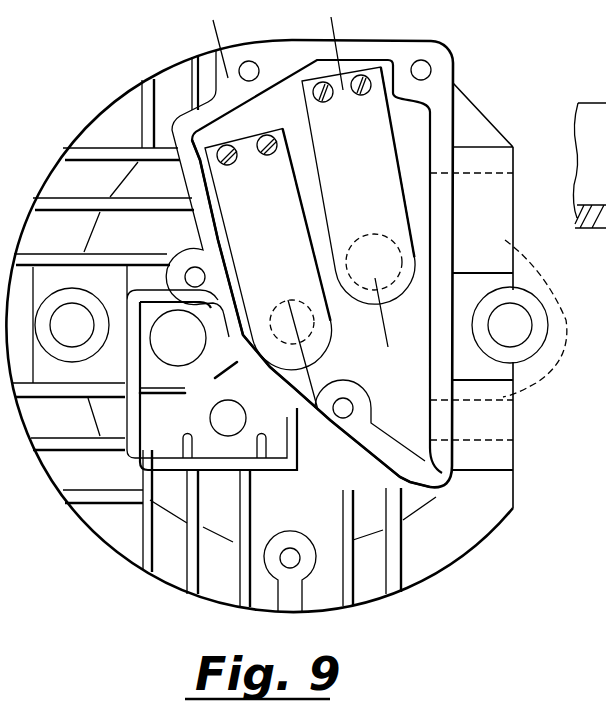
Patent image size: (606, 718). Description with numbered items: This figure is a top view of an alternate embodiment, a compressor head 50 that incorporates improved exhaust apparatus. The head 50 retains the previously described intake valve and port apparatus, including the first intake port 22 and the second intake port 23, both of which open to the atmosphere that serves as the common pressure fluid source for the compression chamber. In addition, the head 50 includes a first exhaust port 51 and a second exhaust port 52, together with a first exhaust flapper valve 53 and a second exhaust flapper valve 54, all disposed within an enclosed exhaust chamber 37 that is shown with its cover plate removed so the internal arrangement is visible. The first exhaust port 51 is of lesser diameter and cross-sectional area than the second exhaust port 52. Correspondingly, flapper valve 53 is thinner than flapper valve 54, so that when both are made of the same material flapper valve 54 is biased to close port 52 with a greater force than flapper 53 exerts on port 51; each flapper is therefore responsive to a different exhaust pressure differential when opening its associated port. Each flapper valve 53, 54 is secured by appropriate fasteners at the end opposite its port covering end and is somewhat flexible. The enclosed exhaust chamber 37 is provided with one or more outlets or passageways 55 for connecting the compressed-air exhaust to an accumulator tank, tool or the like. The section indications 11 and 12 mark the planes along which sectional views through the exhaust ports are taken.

The section line 11- 11 is at (235, 22).
The section line 12- 12 is at (303, 32).
The first intake port 22 is at (210, 417).
The second intake port 23 is at (171, 366).
The enclosed exhaust chamber 37 is at (412, 442).
The compressor head 50 is at (118, 590).
The first exhaust port 51 is at (293, 299).
The second exhaust port 52 is at (384, 233).
The first exhaust flapper valve 53 is at (225, 223).
The second exhaust flapper valve 54 is at (396, 140).
The outlet passageway 55 is at (526, 318).